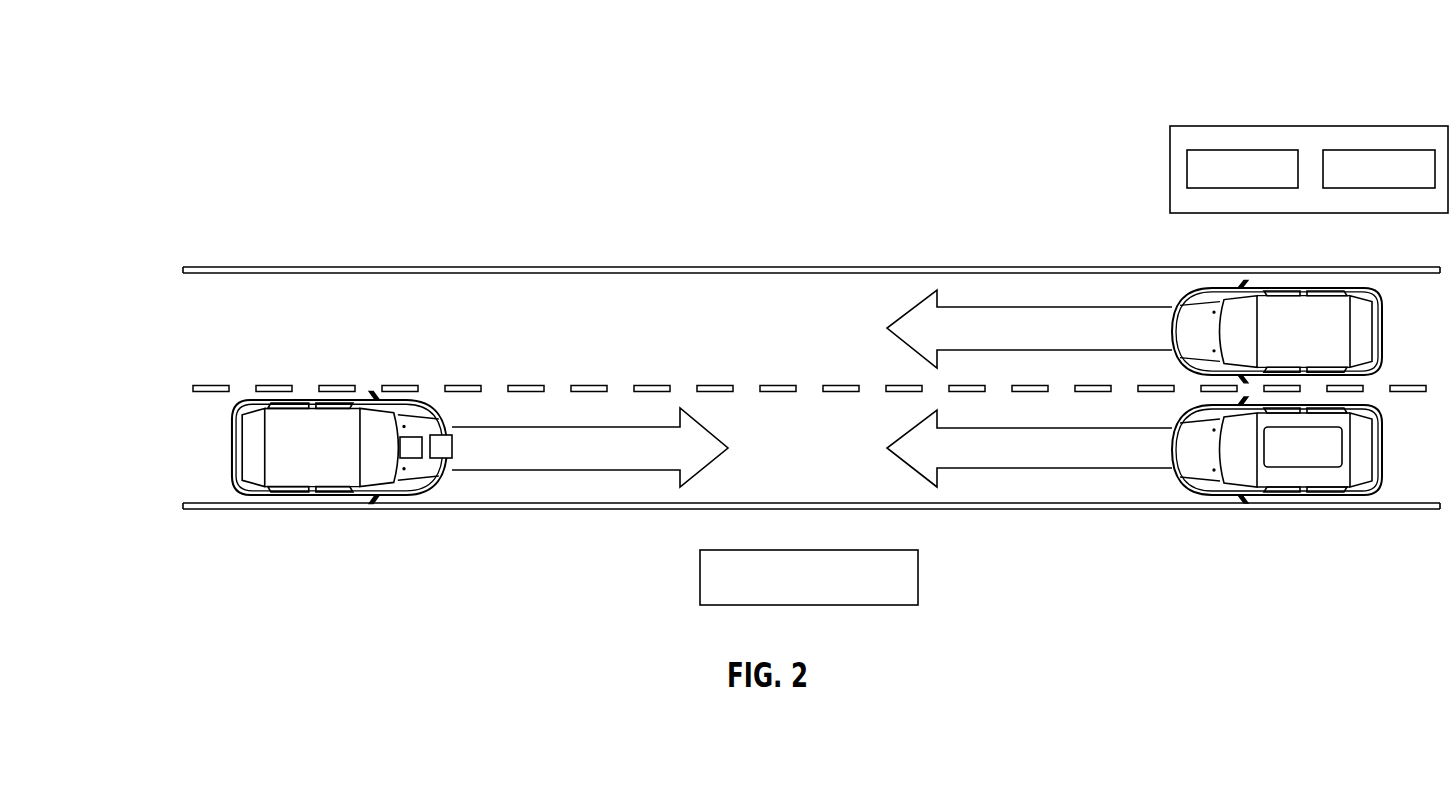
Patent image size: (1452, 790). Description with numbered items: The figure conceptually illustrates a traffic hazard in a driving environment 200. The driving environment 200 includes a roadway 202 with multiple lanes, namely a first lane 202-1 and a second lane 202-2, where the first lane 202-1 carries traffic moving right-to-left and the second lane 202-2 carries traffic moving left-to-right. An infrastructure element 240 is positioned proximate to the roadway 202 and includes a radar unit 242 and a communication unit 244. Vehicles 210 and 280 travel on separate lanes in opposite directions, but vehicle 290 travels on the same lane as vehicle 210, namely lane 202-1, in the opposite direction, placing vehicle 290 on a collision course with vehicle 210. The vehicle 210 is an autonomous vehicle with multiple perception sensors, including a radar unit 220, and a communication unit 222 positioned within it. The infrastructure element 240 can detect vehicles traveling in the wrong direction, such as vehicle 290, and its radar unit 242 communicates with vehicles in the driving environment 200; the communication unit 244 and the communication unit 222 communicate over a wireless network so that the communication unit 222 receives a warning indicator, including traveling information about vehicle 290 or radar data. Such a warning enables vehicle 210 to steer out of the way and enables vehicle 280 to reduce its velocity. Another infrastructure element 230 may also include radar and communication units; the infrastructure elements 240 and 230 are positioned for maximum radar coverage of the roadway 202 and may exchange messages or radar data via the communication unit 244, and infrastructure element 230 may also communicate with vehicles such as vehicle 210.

The driving environment 200 is at (182, 113).
The roadway 202 is at (415, 267).
The first lane 202-1 is at (212, 452).
The second lane 202-2 is at (212, 345).
The vehicle 210 is at (312, 405).
The radar unit 220 is at (453, 447).
The communication unit 222 is at (410, 459).
The infrastructure element 230 is at (700, 578).
The infrastructure element 240 is at (1200, 126).
The radar unit 242 is at (1240, 150).
The communication unit 244 is at (1380, 150).
The vehicle 280 is at (1306, 287).
The vehicle 290 is at (1305, 496).